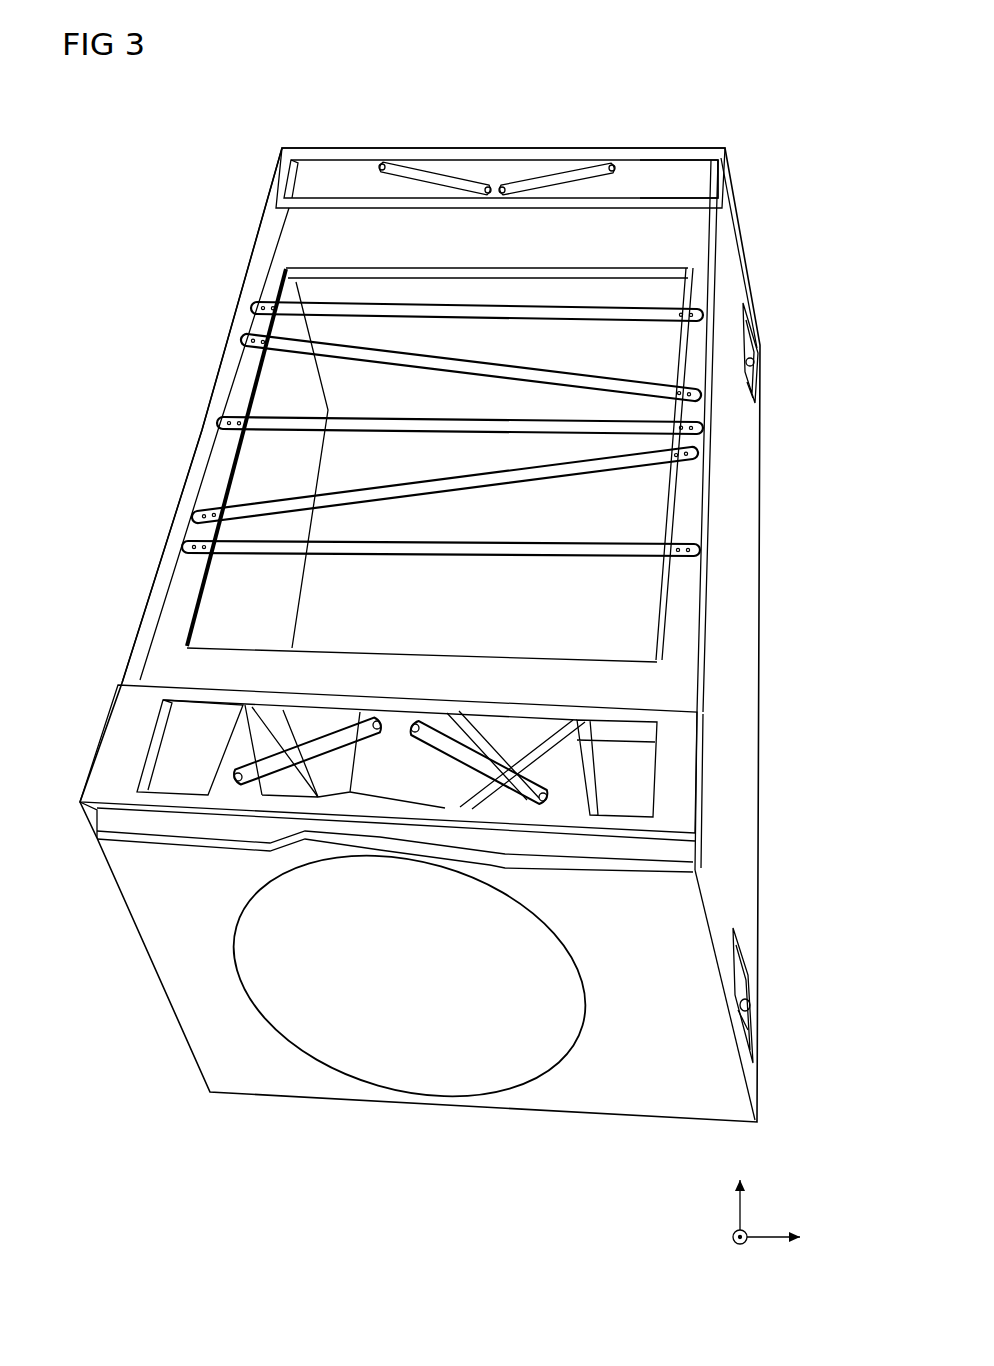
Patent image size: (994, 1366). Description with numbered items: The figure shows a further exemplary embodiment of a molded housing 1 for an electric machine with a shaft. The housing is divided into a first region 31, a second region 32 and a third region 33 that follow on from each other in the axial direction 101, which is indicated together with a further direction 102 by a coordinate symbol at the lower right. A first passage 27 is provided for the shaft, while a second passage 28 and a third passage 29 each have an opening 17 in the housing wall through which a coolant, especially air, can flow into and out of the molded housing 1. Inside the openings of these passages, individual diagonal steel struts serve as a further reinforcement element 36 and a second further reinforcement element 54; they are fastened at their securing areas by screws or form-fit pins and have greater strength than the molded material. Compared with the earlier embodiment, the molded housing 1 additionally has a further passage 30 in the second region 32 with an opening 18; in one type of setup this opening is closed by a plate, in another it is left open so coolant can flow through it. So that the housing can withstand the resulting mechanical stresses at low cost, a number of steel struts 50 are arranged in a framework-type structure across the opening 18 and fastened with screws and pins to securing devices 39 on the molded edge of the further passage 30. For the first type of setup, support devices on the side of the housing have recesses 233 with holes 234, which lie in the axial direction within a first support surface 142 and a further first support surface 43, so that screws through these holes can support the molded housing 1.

The molded housing 1 is at (490, 100).
The opening 17 is at (680, 175).
The opening 18 is at (275, 602).
The first passage 27 is at (405, 1060).
The second passage 28 is at (640, 760).
The third passage 29 is at (333, 175).
The further passage 30 is at (650, 505).
The first region 31 is at (100, 742).
The second region 32 is at (148, 385).
The third region 33 is at (256, 190).
The further reinforcement element 36 is at (300, 800).
The securing devices 39 is at (694, 300).
The further first support surface 43 is at (766, 347).
The steel struts 50 is at (250, 343).
The second further reinforcement element 54 is at (500, 800).
The axial direction 101 is at (745, 1215).
The horizontal axis 102 is at (770, 1245).
The first support surface 142 is at (763, 985).
The recesses 233 is at (760, 388).
The holes 234 is at (756, 364).